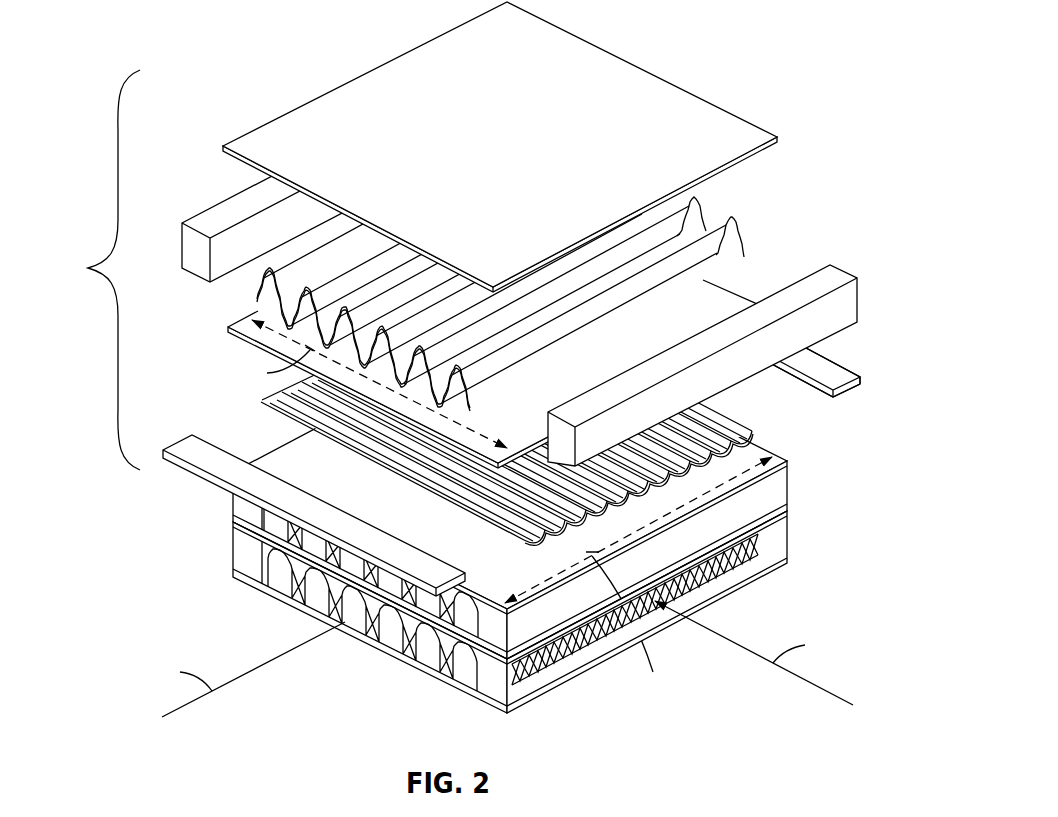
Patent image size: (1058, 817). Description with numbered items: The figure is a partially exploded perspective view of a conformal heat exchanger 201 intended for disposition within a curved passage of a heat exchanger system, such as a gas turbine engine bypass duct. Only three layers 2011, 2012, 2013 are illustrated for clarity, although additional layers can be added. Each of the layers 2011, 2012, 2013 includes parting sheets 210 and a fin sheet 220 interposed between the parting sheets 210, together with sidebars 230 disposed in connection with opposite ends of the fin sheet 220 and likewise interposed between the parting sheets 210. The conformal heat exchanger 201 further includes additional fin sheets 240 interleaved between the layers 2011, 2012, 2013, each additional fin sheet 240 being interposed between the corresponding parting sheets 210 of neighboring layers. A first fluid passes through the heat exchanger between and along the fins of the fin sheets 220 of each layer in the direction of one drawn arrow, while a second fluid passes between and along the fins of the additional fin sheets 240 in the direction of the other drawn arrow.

The conformal heat exchanger 201 is at (473, 359).
The first layer 2011 is at (473, 299).
The second layer 2012 is at (225, 504).
The third layer 2013 is at (228, 562).
The parting sheet 210 is at (549, 235).
The fin sheet 220 is at (737, 226).
The sidebar 230 is at (836, 276).
The additional fin sheet 240 is at (716, 440).